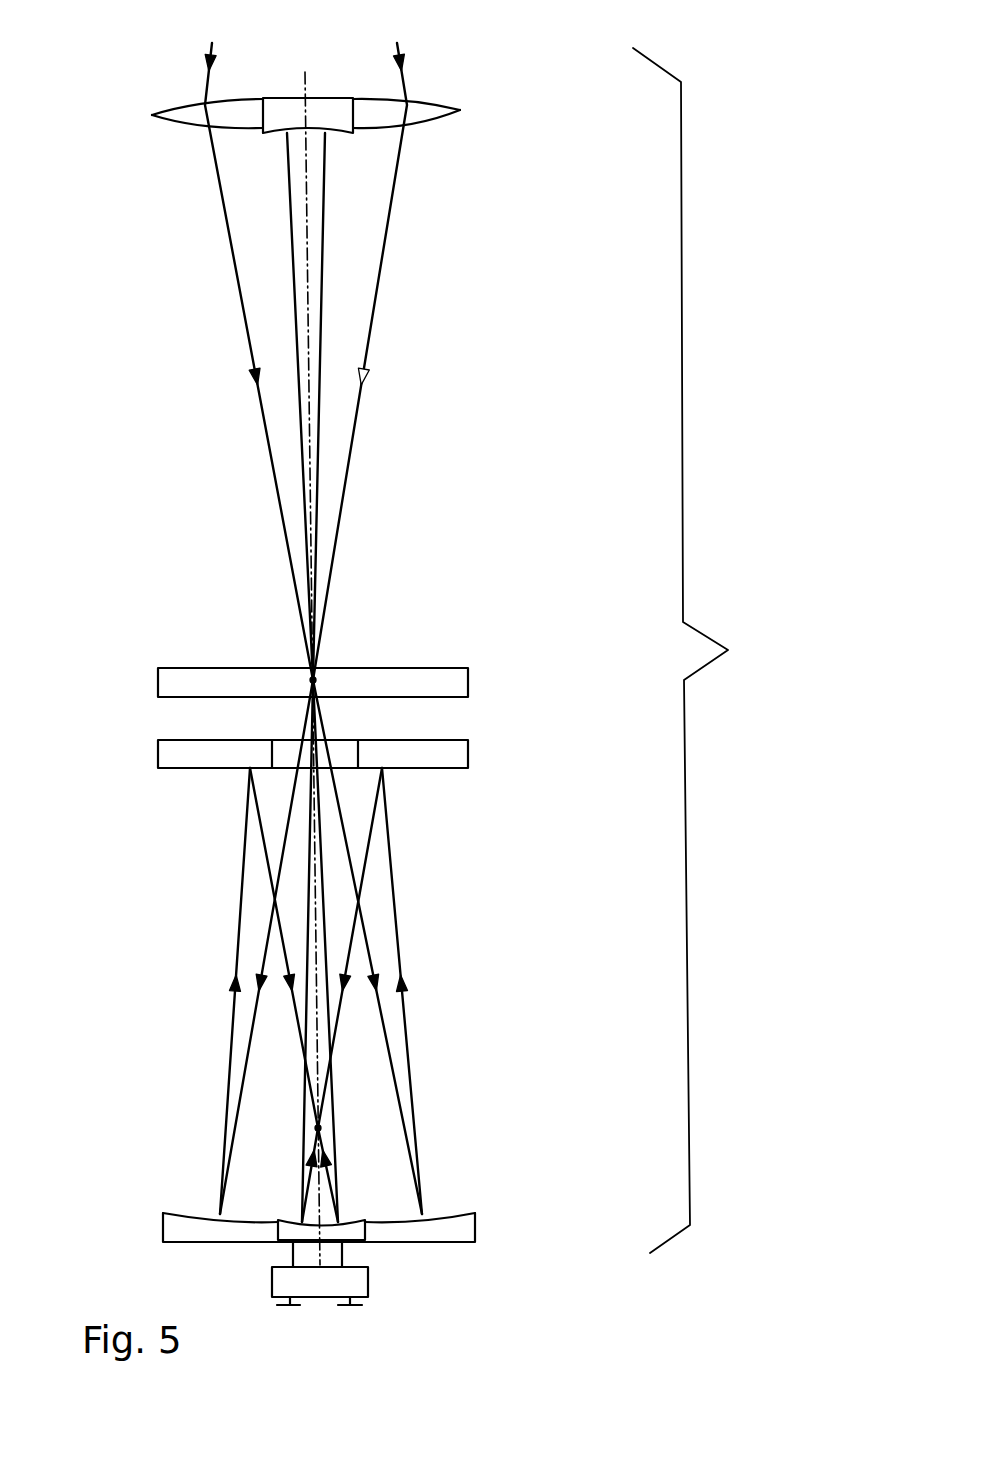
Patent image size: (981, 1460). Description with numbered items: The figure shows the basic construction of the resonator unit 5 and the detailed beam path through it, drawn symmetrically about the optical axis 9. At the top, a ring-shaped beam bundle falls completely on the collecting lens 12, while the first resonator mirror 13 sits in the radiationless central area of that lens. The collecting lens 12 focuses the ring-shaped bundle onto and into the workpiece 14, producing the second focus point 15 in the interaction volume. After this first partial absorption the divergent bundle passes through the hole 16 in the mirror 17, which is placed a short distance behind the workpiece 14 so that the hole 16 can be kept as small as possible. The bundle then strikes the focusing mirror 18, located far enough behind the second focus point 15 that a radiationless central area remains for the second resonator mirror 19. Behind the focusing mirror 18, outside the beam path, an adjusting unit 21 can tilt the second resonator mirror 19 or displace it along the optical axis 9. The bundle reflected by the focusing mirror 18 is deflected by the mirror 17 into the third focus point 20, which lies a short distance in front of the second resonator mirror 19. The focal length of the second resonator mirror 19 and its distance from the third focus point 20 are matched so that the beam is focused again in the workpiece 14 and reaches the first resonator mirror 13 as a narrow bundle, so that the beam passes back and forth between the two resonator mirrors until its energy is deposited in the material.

The resonator unit 5 is at (702, 650).
The optical axis 9 is at (305, 72).
The collecting lens 12 is at (410, 100).
The first resonator mirror 13 is at (337, 118).
The workpiece 14 is at (453, 683).
The second focus point 15 is at (322, 668).
The hole 16 is at (343, 755).
The mirror 17 is at (453, 757).
The focusing mirror 18 is at (460, 1232).
The second resonator mirror 19 is at (348, 1233).
The third focus point 20 is at (322, 1128).
The adjusting unit 21 is at (353, 1282).